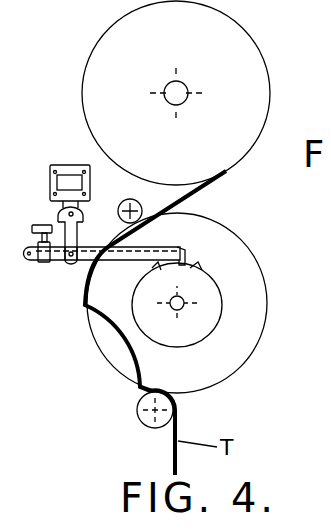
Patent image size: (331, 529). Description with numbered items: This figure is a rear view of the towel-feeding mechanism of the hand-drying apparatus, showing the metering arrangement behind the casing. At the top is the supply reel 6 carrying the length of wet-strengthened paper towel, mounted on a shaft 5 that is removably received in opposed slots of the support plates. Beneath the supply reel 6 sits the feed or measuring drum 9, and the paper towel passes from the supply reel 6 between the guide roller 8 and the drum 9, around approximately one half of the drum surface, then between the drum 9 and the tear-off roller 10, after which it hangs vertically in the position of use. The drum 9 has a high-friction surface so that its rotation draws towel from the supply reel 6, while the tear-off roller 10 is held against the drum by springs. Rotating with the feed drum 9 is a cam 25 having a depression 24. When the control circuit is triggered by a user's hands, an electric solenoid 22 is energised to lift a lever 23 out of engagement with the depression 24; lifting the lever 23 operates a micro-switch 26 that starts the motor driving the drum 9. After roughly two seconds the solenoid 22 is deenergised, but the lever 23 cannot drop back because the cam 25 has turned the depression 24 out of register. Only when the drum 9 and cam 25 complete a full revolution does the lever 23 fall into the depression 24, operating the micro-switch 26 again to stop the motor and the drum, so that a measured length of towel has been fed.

The shaft 5 is at (187, 88).
The supply reel 6 is at (258, 87).
The guide roller 8 is at (124, 203).
The feed or measuring drum 9 is at (237, 368).
The tear-off roller 10 is at (137, 408).
The electric solenoid 22 is at (70, 180).
The lever 23 is at (181, 248).
The depression 24 is at (203, 267).
The cam 25 is at (131, 308).
The micro-switch 26 is at (38, 228).